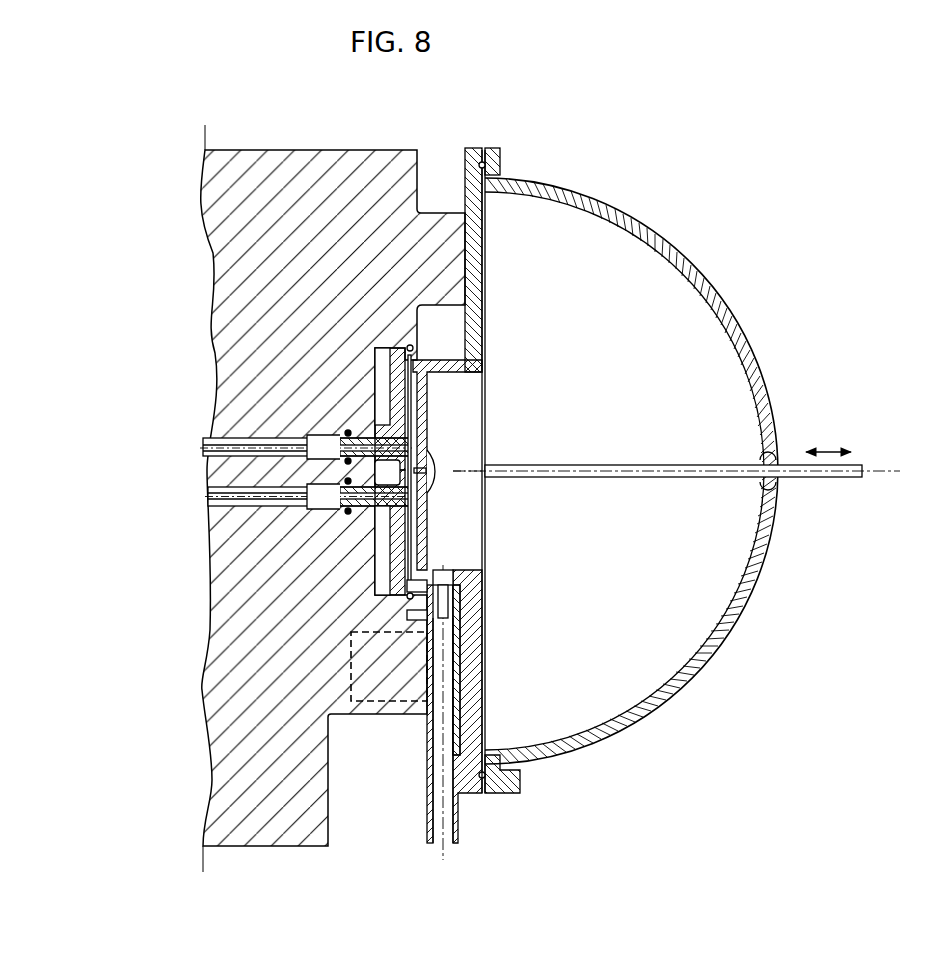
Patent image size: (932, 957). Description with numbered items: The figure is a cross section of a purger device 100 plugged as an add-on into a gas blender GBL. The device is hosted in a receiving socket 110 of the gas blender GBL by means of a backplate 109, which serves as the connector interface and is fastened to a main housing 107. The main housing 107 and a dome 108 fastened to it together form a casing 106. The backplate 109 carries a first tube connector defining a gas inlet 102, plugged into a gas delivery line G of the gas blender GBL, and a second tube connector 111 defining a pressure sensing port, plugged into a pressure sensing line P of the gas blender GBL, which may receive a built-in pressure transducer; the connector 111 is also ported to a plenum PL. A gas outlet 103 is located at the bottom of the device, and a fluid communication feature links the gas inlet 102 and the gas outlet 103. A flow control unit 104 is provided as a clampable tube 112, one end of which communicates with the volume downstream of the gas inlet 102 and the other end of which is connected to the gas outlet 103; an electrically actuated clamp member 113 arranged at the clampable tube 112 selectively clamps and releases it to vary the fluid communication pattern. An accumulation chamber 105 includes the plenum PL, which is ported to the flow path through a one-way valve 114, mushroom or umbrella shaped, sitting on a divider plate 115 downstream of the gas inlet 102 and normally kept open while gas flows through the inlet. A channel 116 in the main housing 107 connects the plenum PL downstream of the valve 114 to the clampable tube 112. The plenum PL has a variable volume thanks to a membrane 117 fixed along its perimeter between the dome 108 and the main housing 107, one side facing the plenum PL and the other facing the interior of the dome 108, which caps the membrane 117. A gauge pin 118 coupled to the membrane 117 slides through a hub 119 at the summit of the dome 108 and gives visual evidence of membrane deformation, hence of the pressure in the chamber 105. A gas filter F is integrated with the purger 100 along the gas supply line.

The purger device 100 is at (823, 242).
The gas inlet 102 is at (327, 488).
The gas outlet 103 is at (448, 832).
The flow control unit 104 is at (417, 711).
The accumulation chamber 105 is at (555, 400).
The casing 106 is at (581, 182).
The main housing 107 is at (459, 166).
The dome 108 is at (654, 239).
The backplate 109 is at (392, 382).
The receiving socket 110 is at (380, 554).
The second tube connector 111 is at (330, 447).
The clampable tube 112 is at (458, 674).
The clamp member 113 is at (352, 688).
The one-way valve 114 is at (436, 463).
The divider plate 115 is at (424, 398).
The channel 116 is at (444, 577).
The membrane 117 is at (489, 623).
The gauge pin 118 is at (829, 478).
The hub 119 is at (771, 466).
The pressure sensing line P is at (316, 438).
The gas delivery line G is at (317, 508).
The gas filter F is at (421, 530).
The plenum PL is at (466, 506).
The gas blender GBL is at (270, 849).